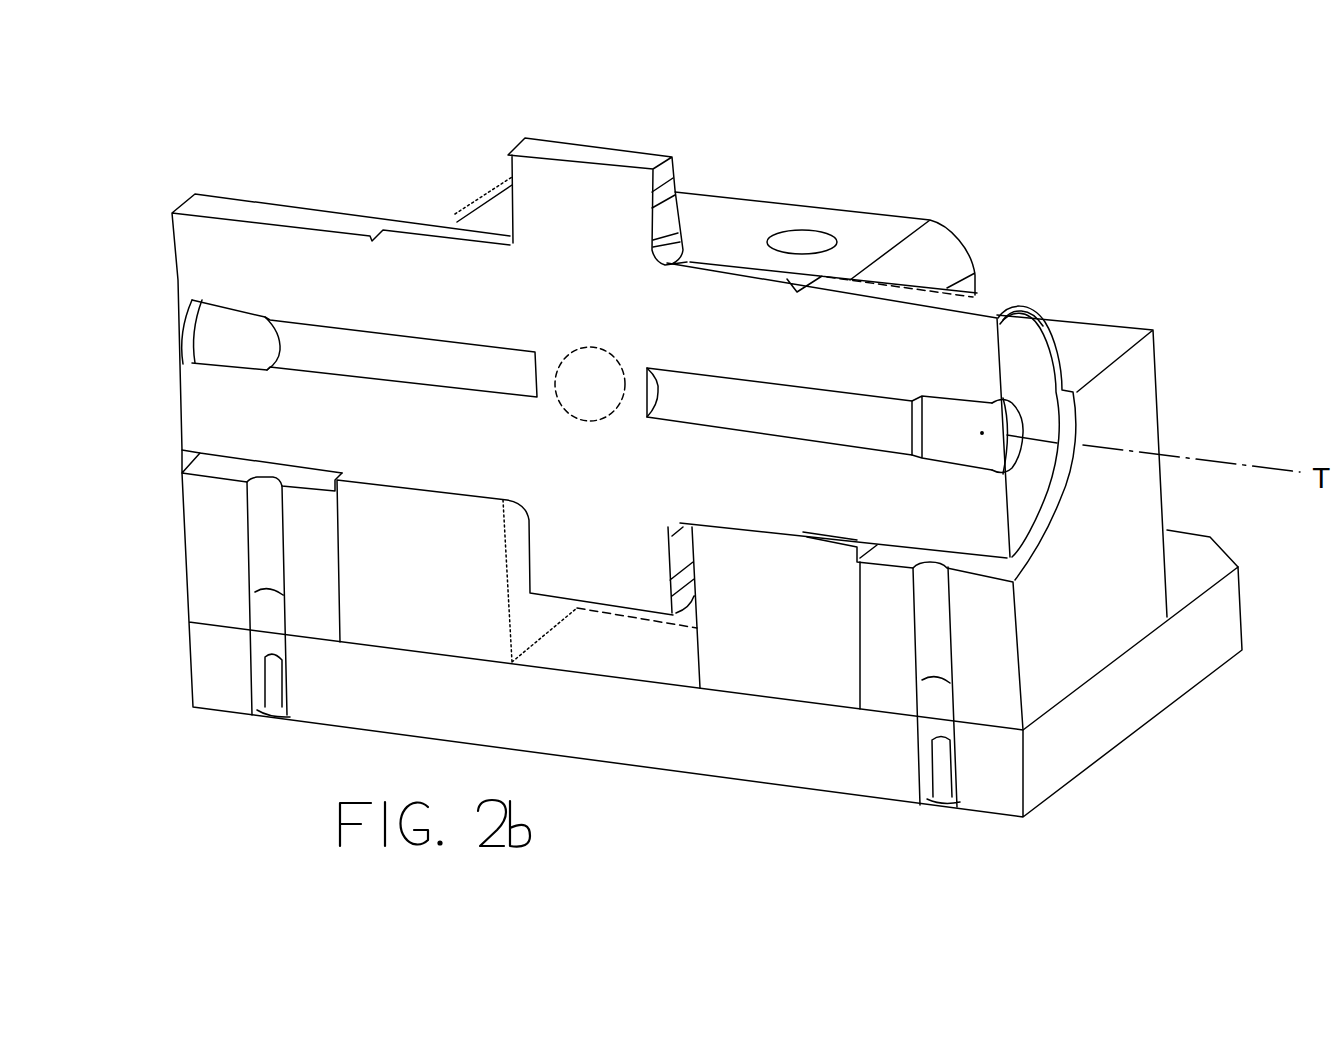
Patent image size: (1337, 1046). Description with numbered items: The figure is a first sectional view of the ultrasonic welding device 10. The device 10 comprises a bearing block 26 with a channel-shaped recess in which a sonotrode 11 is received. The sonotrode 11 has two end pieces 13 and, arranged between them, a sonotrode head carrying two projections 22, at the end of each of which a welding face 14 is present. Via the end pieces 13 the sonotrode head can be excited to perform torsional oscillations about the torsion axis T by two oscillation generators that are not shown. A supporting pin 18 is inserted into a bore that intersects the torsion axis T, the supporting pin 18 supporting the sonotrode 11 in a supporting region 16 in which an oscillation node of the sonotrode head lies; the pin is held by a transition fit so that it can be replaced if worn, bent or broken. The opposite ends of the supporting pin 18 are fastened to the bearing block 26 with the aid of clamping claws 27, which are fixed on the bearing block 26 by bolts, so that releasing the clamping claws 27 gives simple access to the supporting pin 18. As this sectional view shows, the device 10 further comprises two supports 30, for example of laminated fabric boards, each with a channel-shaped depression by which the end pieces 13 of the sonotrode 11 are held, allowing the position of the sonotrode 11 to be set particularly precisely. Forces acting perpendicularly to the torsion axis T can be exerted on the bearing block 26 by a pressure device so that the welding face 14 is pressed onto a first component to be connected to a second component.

The device 10 is at (1188, 98).
The sonotrode 11 is at (890, 190).
The end pieces 13 is at (227, 200).
The welding face 14 is at (577, 157).
The supporting region 16 is at (577, 327).
The supporting pin 18 is at (576, 373).
The projections 22 is at (669, 167).
The bearing block 26 is at (1143, 363).
The clamping claws 27 is at (747, 213).
The supports 30 is at (482, 638).